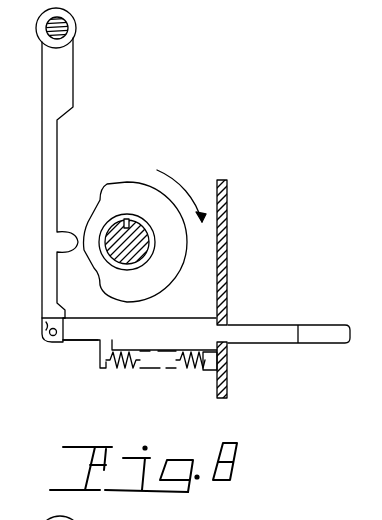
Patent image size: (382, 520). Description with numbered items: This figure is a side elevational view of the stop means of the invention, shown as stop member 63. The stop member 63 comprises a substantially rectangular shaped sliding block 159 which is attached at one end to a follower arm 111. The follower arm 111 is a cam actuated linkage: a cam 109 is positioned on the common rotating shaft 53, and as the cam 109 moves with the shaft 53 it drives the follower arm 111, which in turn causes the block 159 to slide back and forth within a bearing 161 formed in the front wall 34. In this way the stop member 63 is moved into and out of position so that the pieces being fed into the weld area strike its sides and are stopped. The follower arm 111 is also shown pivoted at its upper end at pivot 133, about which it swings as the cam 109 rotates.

The pivot pin 133 is at (68, 25).
The follower arm 111 is at (40, 143).
The cam 109 is at (124, 192).
The common rotating shaft 53 is at (137, 260).
The bearing 161 is at (228, 315).
The stop member 63 is at (300, 298).
The sliding block 159 is at (277, 343).
The front wall 34 is at (228, 391).